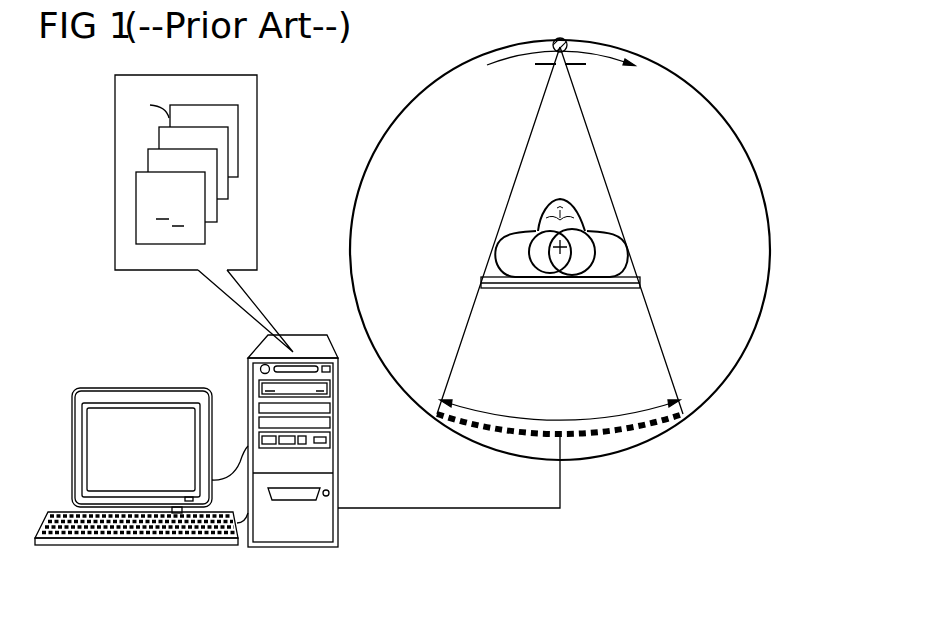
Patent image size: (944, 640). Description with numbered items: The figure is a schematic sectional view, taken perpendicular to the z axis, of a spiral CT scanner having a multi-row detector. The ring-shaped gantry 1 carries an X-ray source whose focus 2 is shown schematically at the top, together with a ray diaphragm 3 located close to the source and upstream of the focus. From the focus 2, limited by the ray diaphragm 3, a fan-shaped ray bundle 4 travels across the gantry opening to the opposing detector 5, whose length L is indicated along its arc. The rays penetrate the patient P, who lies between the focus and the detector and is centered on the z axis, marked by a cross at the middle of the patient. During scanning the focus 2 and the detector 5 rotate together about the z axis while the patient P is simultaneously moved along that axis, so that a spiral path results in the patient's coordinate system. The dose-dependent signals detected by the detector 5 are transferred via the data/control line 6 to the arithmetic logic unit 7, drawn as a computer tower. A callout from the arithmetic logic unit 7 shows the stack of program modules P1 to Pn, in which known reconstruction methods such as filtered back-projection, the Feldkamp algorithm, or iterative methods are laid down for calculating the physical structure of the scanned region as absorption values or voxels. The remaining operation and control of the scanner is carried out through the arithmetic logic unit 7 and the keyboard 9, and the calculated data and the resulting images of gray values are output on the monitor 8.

The gantry 1 is at (392, 122).
The focus 2 is at (568, 51).
The ray diaphragm 3 is at (546, 66).
The ray bundle 4 is at (598, 135).
The detector 5 is at (588, 440).
The data/control line 6 is at (444, 510).
The arithmetic logic unit 7 is at (298, 338).
The monitor 8 is at (140, 395).
The keyboard 9 is at (136, 548).
The patient P is at (524, 232).
The z axis z is at (566, 251).
The length L is at (558, 406).
The program module Pn is at (204, 213).
The program module P1 is at (170, 208).